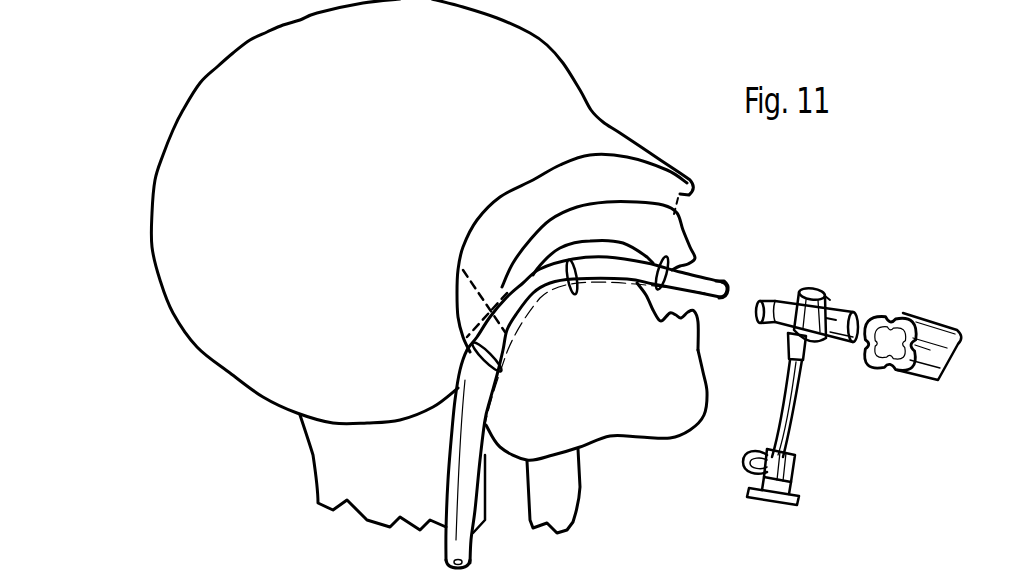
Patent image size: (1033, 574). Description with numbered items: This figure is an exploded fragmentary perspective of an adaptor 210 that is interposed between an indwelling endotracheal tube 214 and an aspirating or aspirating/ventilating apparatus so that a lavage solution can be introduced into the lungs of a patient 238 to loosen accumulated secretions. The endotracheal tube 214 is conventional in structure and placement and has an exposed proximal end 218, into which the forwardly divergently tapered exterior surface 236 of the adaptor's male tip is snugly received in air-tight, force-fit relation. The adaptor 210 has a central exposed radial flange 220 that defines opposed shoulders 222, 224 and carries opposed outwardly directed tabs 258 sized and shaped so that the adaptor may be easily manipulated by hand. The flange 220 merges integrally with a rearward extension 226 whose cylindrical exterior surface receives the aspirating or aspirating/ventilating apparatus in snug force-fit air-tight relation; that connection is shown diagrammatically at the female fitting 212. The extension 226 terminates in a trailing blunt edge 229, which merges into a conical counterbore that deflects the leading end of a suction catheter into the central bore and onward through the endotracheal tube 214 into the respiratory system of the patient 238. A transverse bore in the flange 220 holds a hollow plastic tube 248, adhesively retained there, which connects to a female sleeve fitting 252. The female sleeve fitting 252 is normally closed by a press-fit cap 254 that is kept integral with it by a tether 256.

The patient 238 is at (548, 43).
The endotracheal tube 214 is at (601, 252).
The exposed proximal end 218 is at (730, 268).
The adaptor 210 is at (806, 387).
The exterior surface of the male tip 236 is at (783, 297).
The outwardly directed tabs 258 is at (828, 300).
The rearward extension 226 is at (830, 318).
The female fitting 212 is at (930, 322).
The central exposed radial flange 220 is at (807, 347).
The hollow plastic tube 248 is at (800, 400).
The female sleeve fitting 252 is at (777, 474).
The tether 256 is at (741, 462).
The press-fit cap 254 is at (752, 499).
The trailing blunt edge 229 is at (658, 565).
The shoulder 222 is at (800, 573).
The shoulder 224 is at (872, 573).